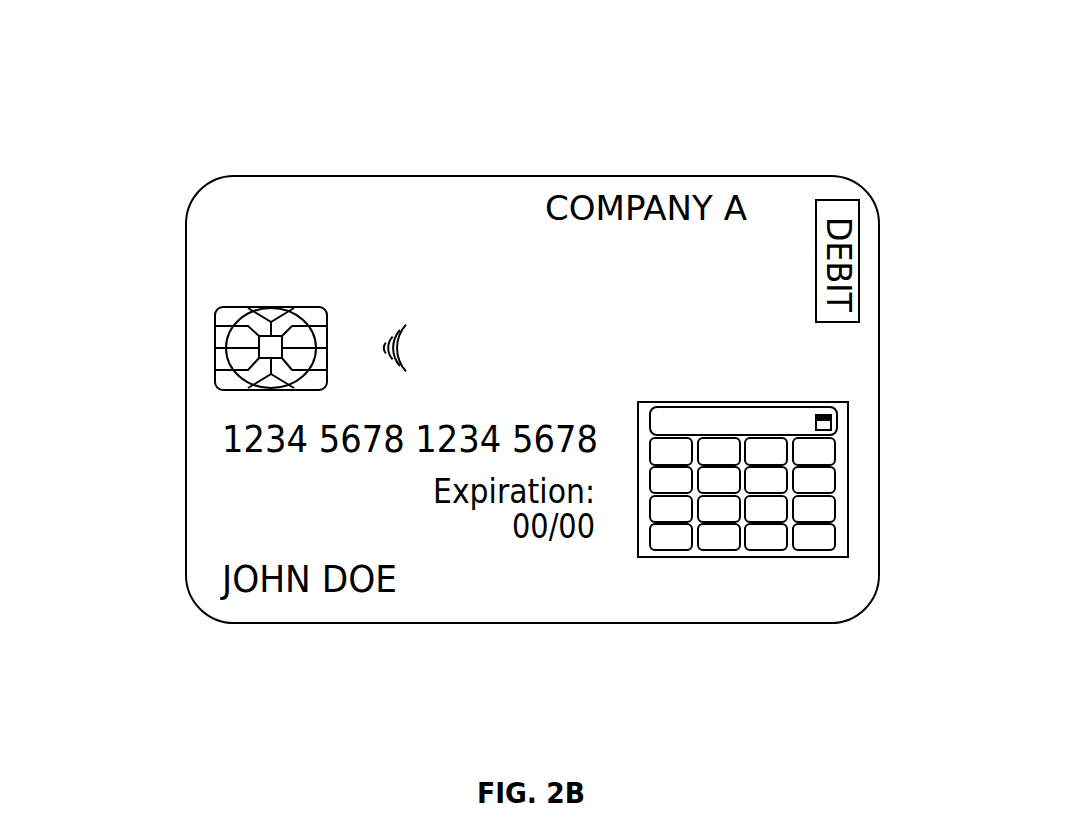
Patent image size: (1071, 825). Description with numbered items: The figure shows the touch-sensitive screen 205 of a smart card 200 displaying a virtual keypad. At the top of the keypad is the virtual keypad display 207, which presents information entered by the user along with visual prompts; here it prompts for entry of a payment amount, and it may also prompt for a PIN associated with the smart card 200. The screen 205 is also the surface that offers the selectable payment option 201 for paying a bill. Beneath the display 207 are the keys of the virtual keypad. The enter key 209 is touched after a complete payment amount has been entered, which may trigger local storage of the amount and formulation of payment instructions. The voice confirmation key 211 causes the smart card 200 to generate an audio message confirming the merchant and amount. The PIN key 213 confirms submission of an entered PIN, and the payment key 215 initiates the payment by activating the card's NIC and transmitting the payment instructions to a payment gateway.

The smart card 200 is at (126, 56).
The selectable payment option 201 is at (848, 421).
The touch-sensitive screen 205 is at (838, 557).
The virtual keypad display 207 is at (649, 422).
The enter key 209 is at (649, 539).
The voice confirmation key 211 is at (649, 511).
The PIN key 213 is at (740, 510).
The payment key 215 is at (720, 551).